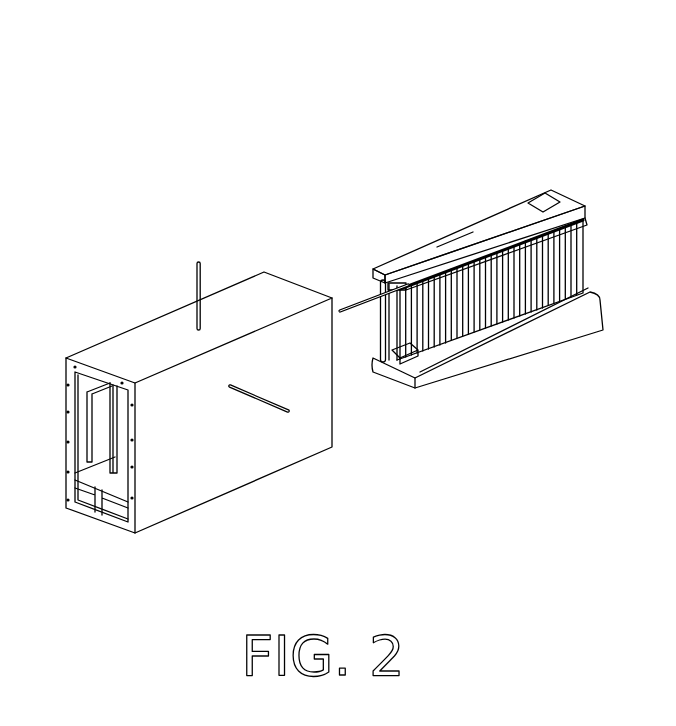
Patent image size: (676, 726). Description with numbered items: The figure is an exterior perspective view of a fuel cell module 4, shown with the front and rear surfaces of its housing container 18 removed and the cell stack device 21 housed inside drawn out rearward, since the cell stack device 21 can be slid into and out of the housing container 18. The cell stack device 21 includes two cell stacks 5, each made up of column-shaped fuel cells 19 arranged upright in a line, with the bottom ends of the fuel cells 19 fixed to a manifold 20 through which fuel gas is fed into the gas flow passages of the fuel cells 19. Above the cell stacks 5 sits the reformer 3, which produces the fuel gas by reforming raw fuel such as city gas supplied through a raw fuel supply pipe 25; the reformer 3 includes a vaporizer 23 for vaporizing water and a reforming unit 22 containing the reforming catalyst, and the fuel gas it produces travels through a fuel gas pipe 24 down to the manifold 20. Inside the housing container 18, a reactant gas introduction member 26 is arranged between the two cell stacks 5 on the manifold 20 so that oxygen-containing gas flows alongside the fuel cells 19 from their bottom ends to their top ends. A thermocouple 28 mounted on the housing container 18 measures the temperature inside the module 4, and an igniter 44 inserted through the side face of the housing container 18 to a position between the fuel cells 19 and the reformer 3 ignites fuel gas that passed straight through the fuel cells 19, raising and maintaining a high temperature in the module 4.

The module 4 is at (150, 92).
The housing container 18 is at (227, 297).
The reactant gas introduction member 26 is at (120, 403).
The thermocouple 28 is at (197, 266).
The igniter 44 is at (267, 405).
The cell stack 5 is at (428, 363).
The manifold 20 is at (422, 378).
The fuel cell 19 is at (583, 230).
The cell stack device 21 is at (510, 186).
The reformer 3 is at (560, 200).
The vaporizer 23 is at (443, 260).
The fuel gas pipe 24 is at (373, 285).
The reforming unit 22 is at (382, 250).
The raw fuel supply pipe 25 is at (350, 298).